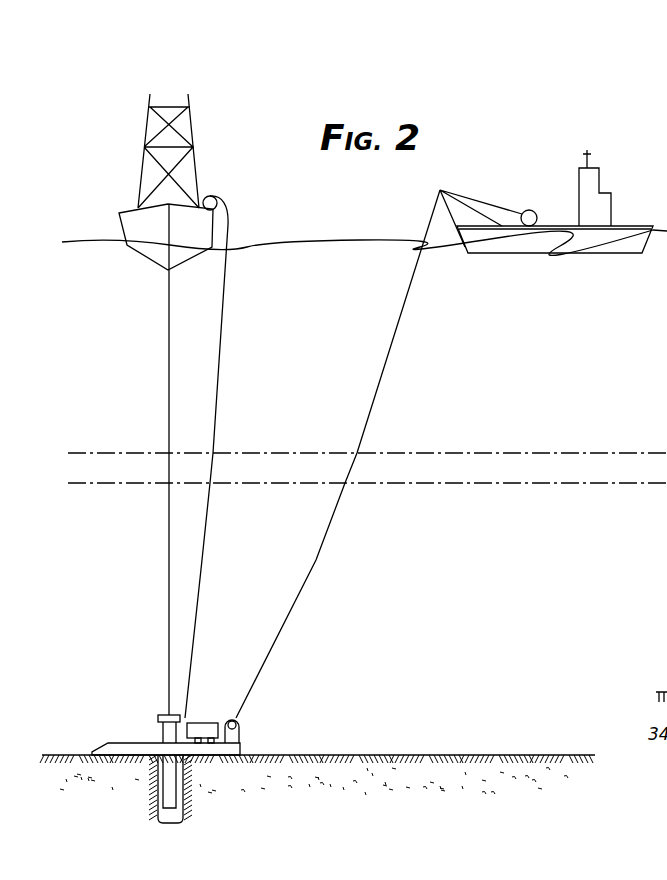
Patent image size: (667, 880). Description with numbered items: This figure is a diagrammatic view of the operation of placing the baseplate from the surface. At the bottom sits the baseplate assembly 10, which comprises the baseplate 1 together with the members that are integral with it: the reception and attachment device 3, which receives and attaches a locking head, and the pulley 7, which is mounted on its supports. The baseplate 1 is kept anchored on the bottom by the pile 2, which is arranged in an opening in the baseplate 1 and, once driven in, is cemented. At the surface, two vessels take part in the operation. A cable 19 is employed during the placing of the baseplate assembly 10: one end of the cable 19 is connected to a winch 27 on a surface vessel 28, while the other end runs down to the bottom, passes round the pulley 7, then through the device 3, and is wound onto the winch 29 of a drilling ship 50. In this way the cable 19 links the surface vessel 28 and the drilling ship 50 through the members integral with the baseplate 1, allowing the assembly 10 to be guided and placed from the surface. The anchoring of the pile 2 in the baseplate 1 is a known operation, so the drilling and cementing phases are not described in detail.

The baseplate 1 is at (118, 745).
The pile 2 is at (170, 793).
The reception and attachment device 3 is at (201, 729).
The pulley 7 is at (234, 717).
The baseplate assembly 10 is at (131, 731).
The cable 19 is at (324, 542).
The winch 27 is at (529, 210).
The surface vessel 28 is at (623, 230).
The winch 29 is at (216, 198).
The drilling ship 50 is at (190, 235).